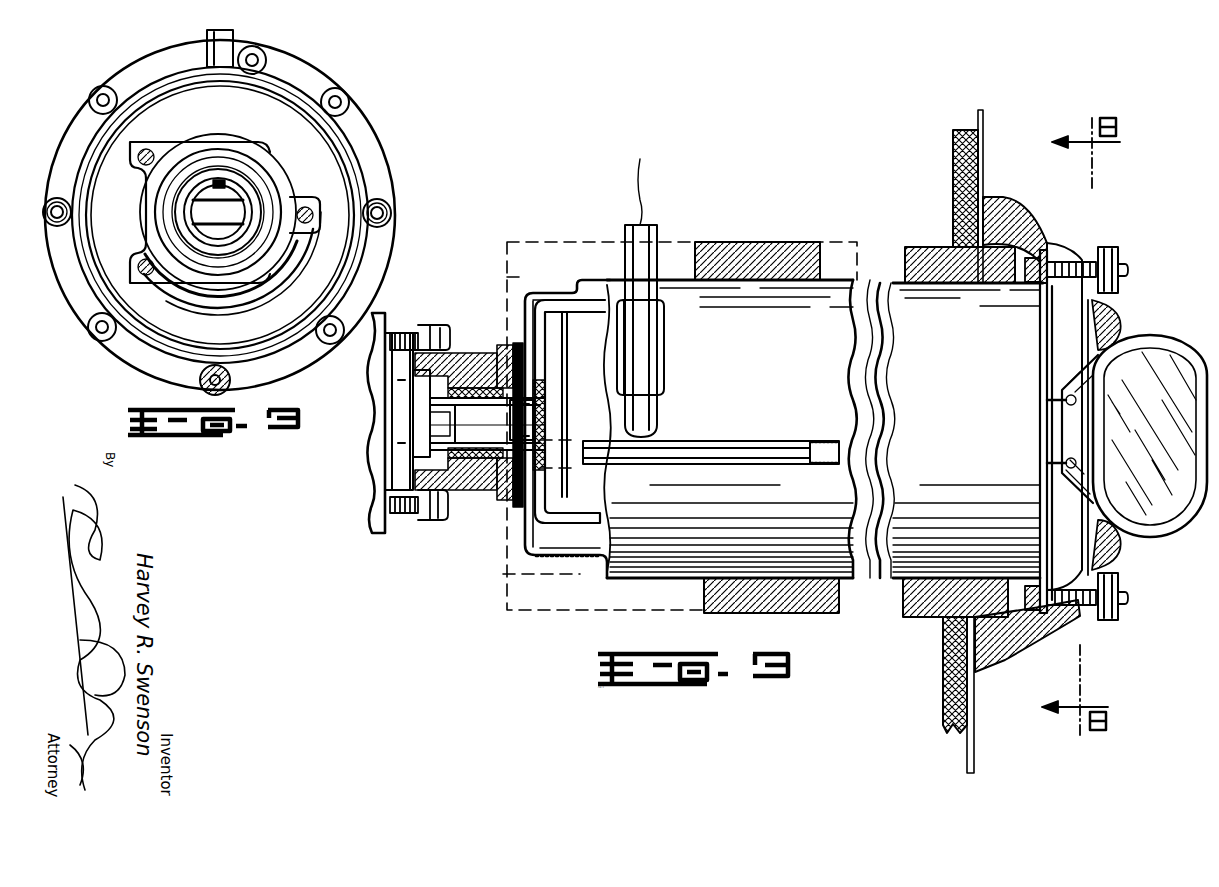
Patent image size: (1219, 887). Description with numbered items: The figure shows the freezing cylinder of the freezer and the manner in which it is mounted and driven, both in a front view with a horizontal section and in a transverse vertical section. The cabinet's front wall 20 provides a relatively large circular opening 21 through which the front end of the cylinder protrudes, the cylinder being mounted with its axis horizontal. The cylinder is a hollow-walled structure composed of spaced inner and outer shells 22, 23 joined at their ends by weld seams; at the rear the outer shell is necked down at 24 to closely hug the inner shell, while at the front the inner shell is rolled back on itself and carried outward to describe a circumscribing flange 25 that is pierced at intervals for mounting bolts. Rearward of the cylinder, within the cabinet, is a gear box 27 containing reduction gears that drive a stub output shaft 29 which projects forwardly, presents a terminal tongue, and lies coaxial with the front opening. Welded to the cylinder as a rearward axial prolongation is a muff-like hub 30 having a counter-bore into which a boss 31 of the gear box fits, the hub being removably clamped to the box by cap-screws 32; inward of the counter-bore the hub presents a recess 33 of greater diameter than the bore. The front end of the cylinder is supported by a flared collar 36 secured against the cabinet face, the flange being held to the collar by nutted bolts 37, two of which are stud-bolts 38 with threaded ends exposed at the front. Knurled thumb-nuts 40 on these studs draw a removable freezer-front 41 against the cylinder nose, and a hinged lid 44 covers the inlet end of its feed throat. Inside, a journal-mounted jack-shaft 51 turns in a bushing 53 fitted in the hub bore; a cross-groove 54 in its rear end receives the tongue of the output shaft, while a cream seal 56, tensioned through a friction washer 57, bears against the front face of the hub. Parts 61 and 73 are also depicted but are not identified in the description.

In FIG. 3, the front wall 20 is at (955, 160).
In FIG. 3, the opening 21 is at (946, 247).
In FIG. 2, the inner shell 22 is at (348, 192).
In FIG. 3, the inner shell 22 is at (527, 296).
In FIG. 2, the outer shell 23 is at (352, 168).
In FIG. 3, the outer shell 23 is at (612, 290).
In FIG. 3, the necked-down portion 24 is at (577, 240).
In FIG. 2, the circumscribing flange 25 is at (294, 362).
In FIG. 3, the circumscribing flange 25 is at (1040, 472).
In FIG. 3, the gear box 27 is at (378, 520).
In FIG. 3, the stub output shaft 29 is at (452, 422).
In FIG. 2, the muff-like hub 30 is at (240, 152).
In FIG. 3, the muff-like hub 30 is at (474, 508).
In FIG. 3, the boss 31 is at (402, 396).
In FIG. 2, the cap-screws 32 is at (147, 149).
In FIG. 3, the cap-screws 32 is at (444, 340).
In FIG. 2, the recess 33 is at (232, 252).
In FIG. 3, the recess 33 is at (456, 368).
In FIG. 3, the flared collar 36 is at (1022, 632).
In FIG. 2, the nutted bolts 37 is at (382, 298).
In FIG. 2, the stud-bolts 38 is at (70, 216).
In FIG. 3, the stud-bolts 38 is at (1124, 280).
In FIG. 3, the knurled thumb-nuts 40 is at (1108, 248).
In FIG. 3, the freezer-front 41 is at (1106, 540).
In FIG. 3, the hinged lid 44 is at (1148, 355).
In FIG. 2, the jack-shaft 51 is at (240, 198).
In FIG. 3, the jack-shaft 51 is at (480, 482).
In FIG. 2, the bushing 53 is at (207, 184).
In FIG. 3, the bushing 53 is at (440, 468).
In FIG. 2, the cross-groove 54 is at (243, 212).
In FIG. 3, the cross-groove 54 is at (438, 432).
In FIG. 3, the cream seal 56 is at (540, 382).
In FIG. 3, the friction washer 57 is at (540, 462).
In FIG. 3, the plate 61 is at (563, 398).
In FIG. 3, the insulating block 73 is at (748, 250).